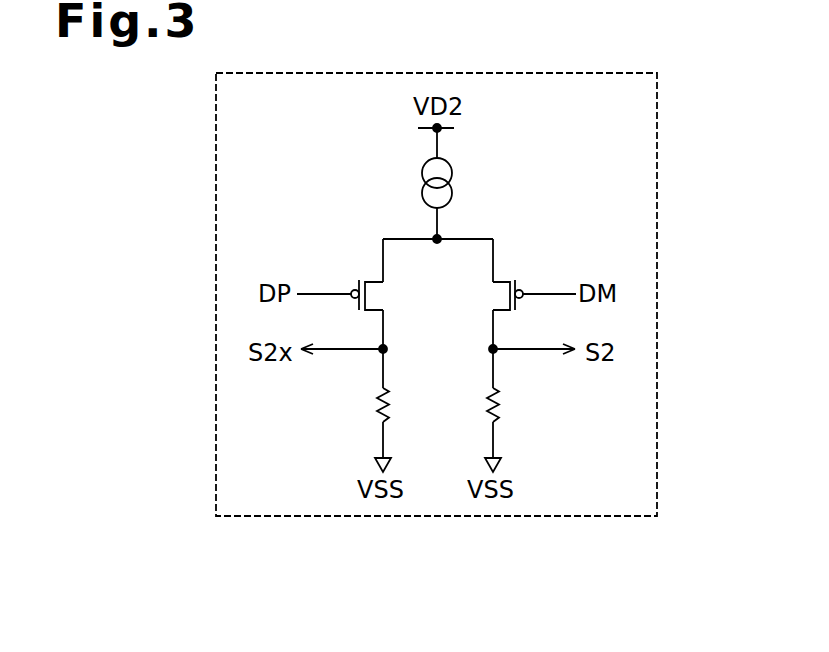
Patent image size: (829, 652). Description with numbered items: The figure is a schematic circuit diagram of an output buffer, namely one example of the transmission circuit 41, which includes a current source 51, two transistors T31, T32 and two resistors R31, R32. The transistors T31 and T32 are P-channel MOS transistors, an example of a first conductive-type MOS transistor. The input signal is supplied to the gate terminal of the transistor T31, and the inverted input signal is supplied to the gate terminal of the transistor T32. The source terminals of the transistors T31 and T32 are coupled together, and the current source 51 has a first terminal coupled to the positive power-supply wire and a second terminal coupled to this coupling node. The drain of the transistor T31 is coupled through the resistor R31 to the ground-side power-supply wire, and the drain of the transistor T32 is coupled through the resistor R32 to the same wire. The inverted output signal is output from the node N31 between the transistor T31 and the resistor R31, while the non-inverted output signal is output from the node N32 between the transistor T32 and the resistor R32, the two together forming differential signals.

The transmission circuit 41 is at (657, 107).
The current source 51 is at (452, 173).
The transistor T31 is at (353, 283).
The transistor T32 is at (518, 283).
The node N31 is at (386, 346).
The node N32 is at (491, 352).
The resistor R31 is at (376, 392).
The resistor R32 is at (499, 391).